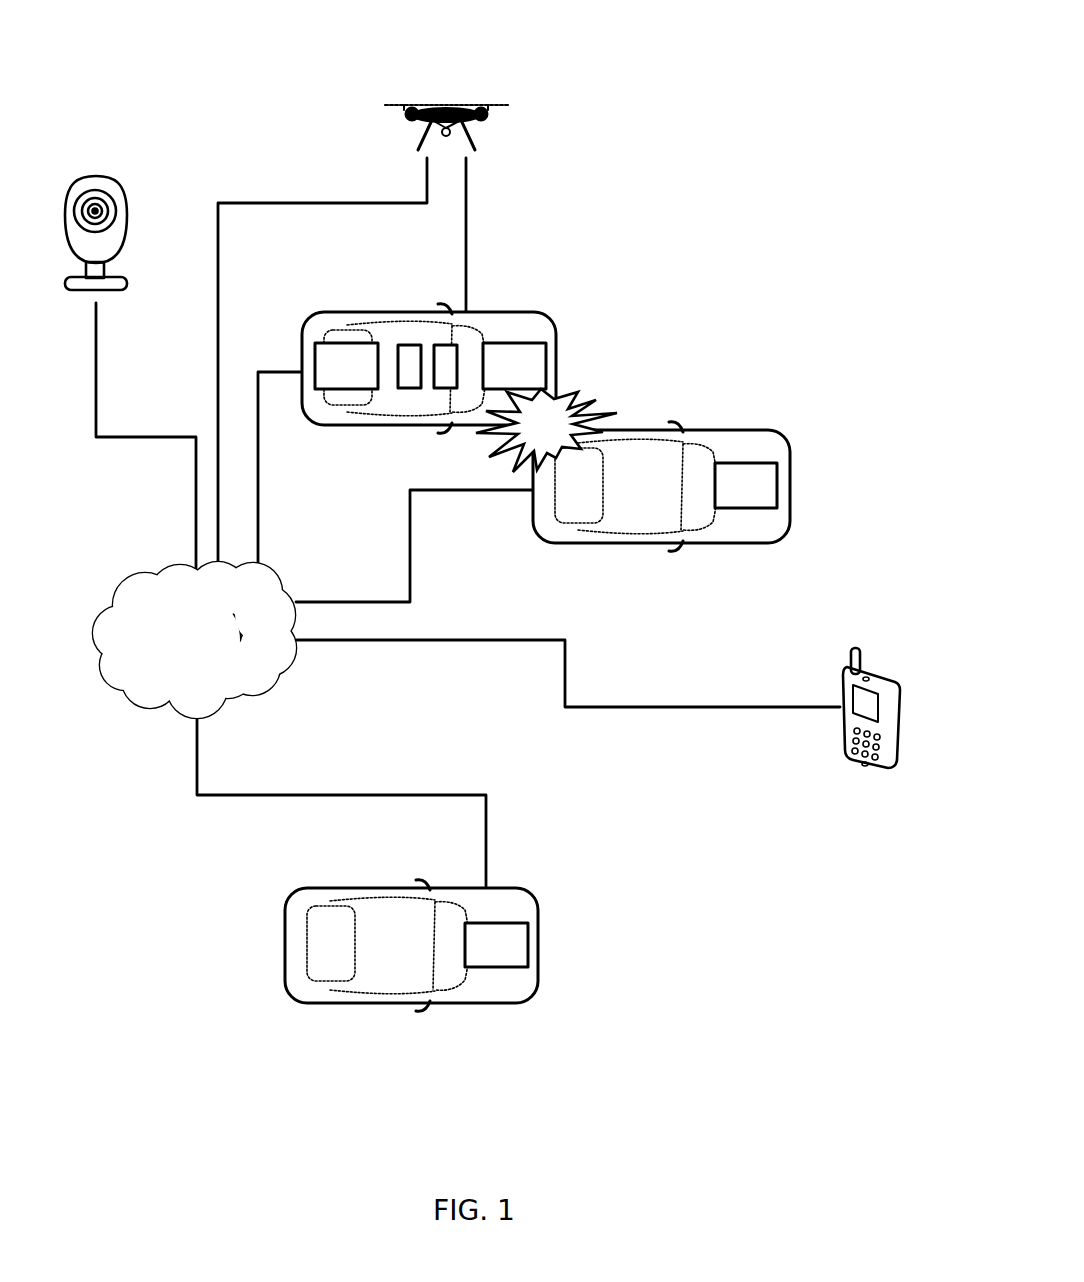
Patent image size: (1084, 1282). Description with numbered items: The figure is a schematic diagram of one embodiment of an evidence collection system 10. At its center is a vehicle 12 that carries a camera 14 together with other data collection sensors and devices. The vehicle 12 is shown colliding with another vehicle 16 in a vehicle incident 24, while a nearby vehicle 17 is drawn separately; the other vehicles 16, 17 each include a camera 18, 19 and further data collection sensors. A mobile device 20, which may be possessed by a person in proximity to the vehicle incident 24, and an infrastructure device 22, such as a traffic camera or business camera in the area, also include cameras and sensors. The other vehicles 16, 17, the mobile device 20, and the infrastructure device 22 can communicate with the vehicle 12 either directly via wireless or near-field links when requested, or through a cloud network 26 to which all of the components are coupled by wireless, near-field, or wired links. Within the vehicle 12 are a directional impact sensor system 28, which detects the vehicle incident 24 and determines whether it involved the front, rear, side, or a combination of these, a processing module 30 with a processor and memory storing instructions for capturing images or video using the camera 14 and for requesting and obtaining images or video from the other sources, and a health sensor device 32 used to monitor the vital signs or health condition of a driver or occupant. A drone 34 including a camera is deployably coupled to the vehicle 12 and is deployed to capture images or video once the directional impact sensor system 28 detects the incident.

The evidence collection system 10 is at (705, 278).
The vehicle 12 is at (452, 358).
The camera 14 is at (516, 343).
The other vehicle 16 is at (683, 438).
The nearby vehicle 17 is at (381, 983).
The camera 18 is at (752, 463).
The camera 19 is at (493, 967).
The mobile device 20 is at (877, 670).
The infrastructure device 22 is at (113, 183).
The vehicle incident 24 is at (577, 393).
The cloud network 26 is at (104, 680).
The directional impact sensor system 28 is at (357, 343).
The processing module 30 is at (441, 388).
The health sensor device 32 is at (407, 388).
The drone 34 is at (446, 108).